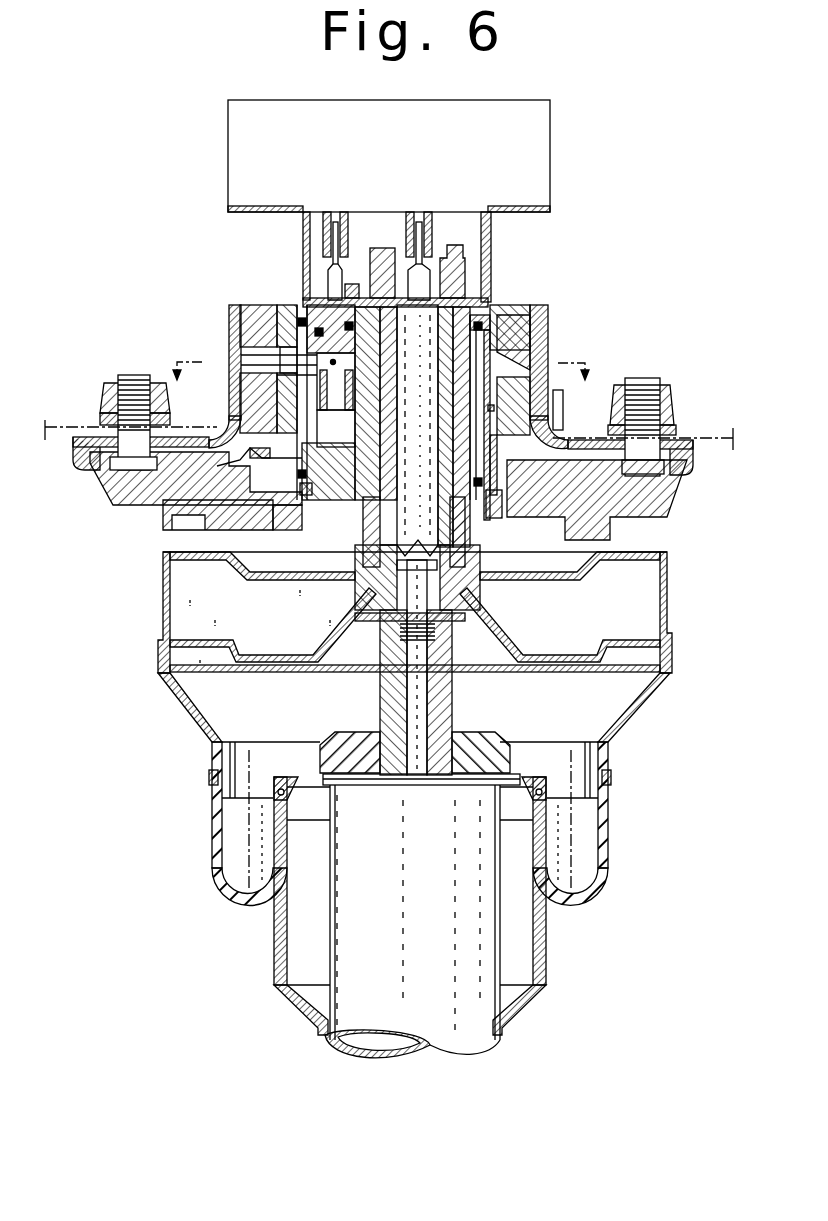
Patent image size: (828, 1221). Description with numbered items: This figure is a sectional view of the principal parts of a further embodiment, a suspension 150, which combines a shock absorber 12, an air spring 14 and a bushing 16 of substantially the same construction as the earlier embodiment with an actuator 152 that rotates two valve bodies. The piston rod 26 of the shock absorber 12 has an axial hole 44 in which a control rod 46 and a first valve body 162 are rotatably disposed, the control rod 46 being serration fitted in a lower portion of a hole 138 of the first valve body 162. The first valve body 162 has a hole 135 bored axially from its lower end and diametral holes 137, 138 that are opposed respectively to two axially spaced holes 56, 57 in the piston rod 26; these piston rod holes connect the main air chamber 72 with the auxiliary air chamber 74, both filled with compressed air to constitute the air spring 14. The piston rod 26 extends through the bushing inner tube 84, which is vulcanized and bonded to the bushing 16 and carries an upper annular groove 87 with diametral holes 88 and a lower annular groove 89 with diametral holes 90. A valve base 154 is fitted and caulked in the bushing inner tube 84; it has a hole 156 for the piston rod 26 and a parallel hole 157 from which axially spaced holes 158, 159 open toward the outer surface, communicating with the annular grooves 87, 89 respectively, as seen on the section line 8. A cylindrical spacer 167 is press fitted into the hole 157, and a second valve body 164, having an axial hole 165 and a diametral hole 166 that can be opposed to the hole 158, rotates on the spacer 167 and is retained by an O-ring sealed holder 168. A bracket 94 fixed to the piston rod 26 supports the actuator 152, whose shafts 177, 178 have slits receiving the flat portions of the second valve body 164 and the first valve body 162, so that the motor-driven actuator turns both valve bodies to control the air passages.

The section line 8- 8 is at (378, 396).
The shock absorber 12 is at (322, 915).
The air spring 14 is at (178, 710).
The bushing 16 is at (245, 320).
The piston rod 26 is at (385, 700).
The hole 44 is at (452, 300).
The control rod 46 is at (425, 742).
The hole 56 is at (488, 585).
The hole 57 is at (500, 625).
The main air chamber 72 is at (590, 730).
The auxiliary air chamber 74 is at (635, 600).
The bushing inner tube 84 is at (295, 318).
The annular groove 87 is at (303, 320).
The holes 88 is at (515, 362).
The annular groove 89 is at (242, 582).
The holes 90 is at (528, 452).
The bracket 94 is at (491, 250).
The hole 135 is at (362, 545).
The hole 137 is at (470, 548).
The hole 138 is at (445, 660).
The suspension 150 is at (163, 356).
The actuator 152 is at (228, 174).
The valve base 154 is at (510, 330).
The hole 156 is at (372, 497).
The hole 157 is at (320, 298).
The hole 158 is at (317, 380).
The hole 159 is at (232, 526).
The first valve body 162 is at (430, 330).
The second valve body 164 is at (350, 284).
The hole 165 is at (277, 405).
The hole 166 is at (250, 365).
The cylindrical spacer 167 is at (264, 471).
The holder 168 is at (346, 298).
The shaft 177 is at (333, 262).
The shaft 178 is at (425, 252).